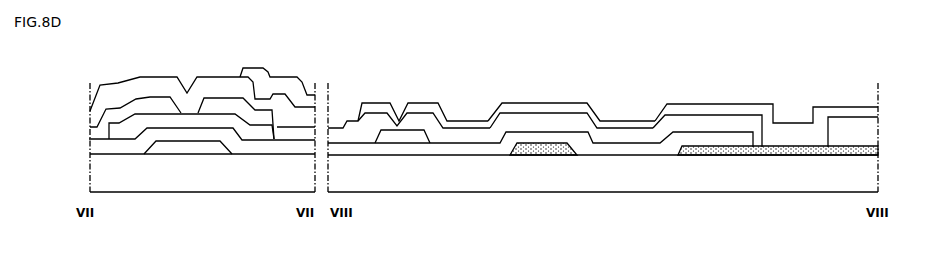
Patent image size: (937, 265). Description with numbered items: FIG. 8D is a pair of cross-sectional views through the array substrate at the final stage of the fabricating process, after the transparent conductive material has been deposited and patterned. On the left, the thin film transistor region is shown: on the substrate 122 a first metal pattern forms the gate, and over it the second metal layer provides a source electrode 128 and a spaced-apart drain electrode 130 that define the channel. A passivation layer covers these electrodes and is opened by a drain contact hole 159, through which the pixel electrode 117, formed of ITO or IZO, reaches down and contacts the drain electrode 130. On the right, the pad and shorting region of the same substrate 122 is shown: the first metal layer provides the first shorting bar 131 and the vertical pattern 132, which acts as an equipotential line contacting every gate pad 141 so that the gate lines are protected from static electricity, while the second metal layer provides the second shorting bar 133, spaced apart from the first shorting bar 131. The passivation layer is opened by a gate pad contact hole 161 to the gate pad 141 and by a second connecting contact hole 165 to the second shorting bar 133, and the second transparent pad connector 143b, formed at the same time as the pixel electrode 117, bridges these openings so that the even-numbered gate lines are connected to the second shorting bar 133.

The pixel electrode 117 is at (303, 88).
The substrate 122 is at (198, 181).
The source electrode 128 is at (147, 100).
The drain electrode 130 is at (218, 97).
The first shorting bar 131 is at (542, 147).
The vertical pattern 132 is at (712, 150).
The second shorting bar 133 is at (405, 137).
The gate pad 141 is at (783, 146).
The second transparent pad connector 143b is at (602, 122).
The drain contact hole 159 is at (268, 93).
The gate pad contact hole 161 is at (794, 104).
The second connecting contact hole 165 is at (401, 113).